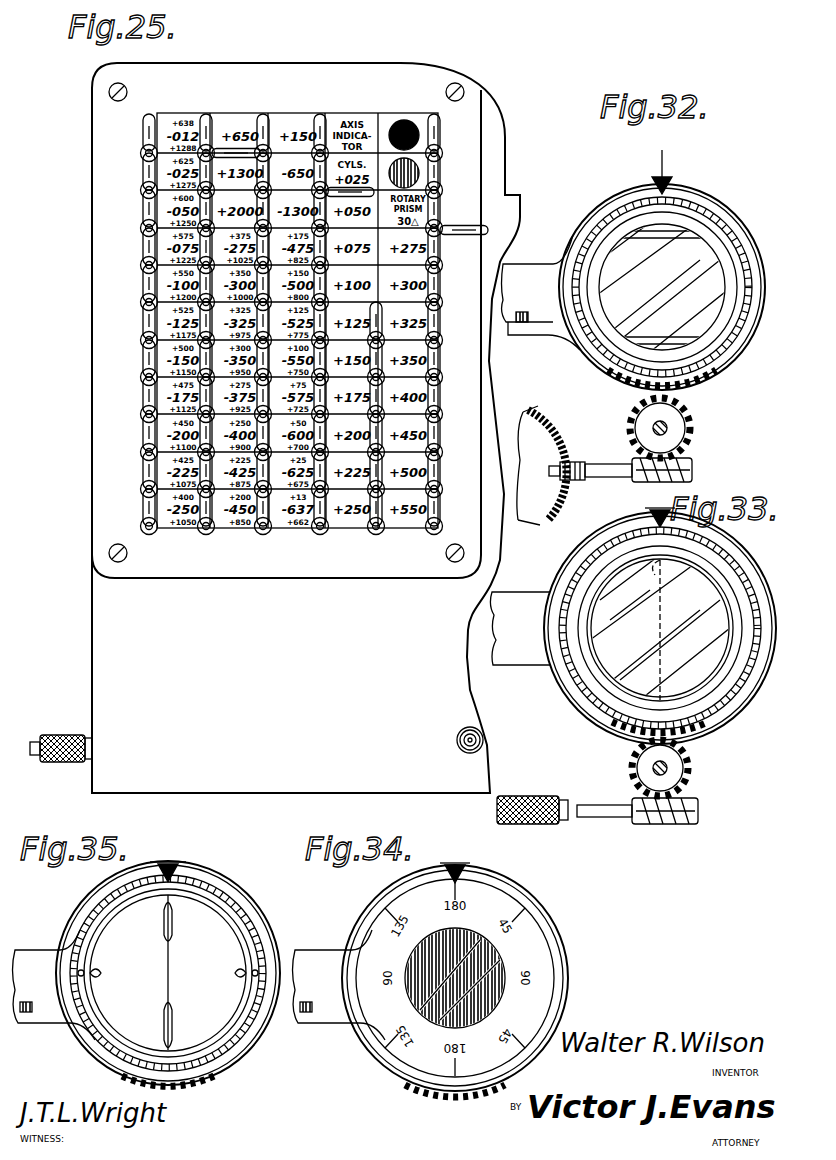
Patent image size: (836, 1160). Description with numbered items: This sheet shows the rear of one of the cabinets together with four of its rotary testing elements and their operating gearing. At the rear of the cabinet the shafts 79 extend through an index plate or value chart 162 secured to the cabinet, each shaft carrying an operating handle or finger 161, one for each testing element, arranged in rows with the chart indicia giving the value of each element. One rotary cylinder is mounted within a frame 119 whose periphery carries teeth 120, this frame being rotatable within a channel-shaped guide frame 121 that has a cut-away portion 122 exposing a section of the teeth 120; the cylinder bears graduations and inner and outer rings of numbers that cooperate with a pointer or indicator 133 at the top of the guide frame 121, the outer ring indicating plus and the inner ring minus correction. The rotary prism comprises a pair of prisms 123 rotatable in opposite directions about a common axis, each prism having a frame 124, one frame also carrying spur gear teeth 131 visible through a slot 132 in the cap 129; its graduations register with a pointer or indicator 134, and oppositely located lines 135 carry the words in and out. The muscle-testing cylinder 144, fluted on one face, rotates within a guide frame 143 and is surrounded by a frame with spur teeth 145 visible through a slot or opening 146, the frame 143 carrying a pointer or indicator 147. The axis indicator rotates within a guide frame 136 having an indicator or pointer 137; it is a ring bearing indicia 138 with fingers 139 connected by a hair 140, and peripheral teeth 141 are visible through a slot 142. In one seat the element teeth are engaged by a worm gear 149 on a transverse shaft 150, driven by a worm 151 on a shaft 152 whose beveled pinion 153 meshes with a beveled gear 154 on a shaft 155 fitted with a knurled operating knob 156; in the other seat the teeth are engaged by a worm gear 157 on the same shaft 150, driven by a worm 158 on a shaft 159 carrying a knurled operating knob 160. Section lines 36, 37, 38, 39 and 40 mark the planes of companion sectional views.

In FIG. 32, the section line 36 is at (658, 144).
In FIG. 32, the section line 37 is at (800, 287).
In FIG. 33, the section line 38 is at (660, 800).
In FIG. 34, the section line 39 is at (640, 978).
In FIG. 35, the section line 40 is at (176, 1132).
In FIG. 25, the shafts 79 is at (328, 150).
In FIG. 32, the frame 119 is at (690, 200).
In FIG. 32, the teeth 120 is at (700, 395).
In FIG. 32, the guide frame 121 is at (735, 215).
In FIG. 32, the cut-away portion 122 is at (718, 385).
In FIG. 33, the prisms 123 is at (620, 668).
In FIG. 33, the frame 124 is at (735, 600).
In FIG. 33, the cap 129 is at (740, 560).
In FIG. 33, the spur gear teeth 131 is at (700, 730).
In FIG. 33, the slot 132 is at (700, 722).
In FIG. 32, the pointer or indicator 133 is at (668, 175).
In FIG. 33, the pointer or indicator 134 is at (645, 512).
In FIG. 33, the lines 135 is at (668, 655).
In FIG. 35, the guide frame 136 is at (255, 900).
In FIG. 35, the indicator or pointer 137 is at (181, 860).
In FIG. 35, the indicia 138 is at (95, 925).
In FIG. 35, the fingers 139 is at (173, 930).
In FIG. 35, the hair 140 is at (172, 985).
In FIG. 35, the teeth 141 is at (200, 1085).
In FIG. 35, the slot 142 is at (240, 1068).
In FIG. 34, the guide frame 143 is at (545, 933).
In FIG. 34, the cylinder 144 is at (505, 998).
In FIG. 34, the spur teeth 145 is at (428, 1085).
In FIG. 34, the slot or opening 146 is at (500, 1085).
In FIG. 34, the pointer or indicator 147 is at (470, 865).
In FIG. 32, the worm gear 149 is at (690, 428).
In FIG. 32, the shaft 150 is at (635, 430).
In FIG. 33, the shaft 150 is at (680, 775).
In FIG. 32, the worm 151 is at (698, 462).
In FIG. 32, the shaft 152 is at (560, 477).
In FIG. 32, the beveled pinion 153 is at (570, 460).
In FIG. 32, the beveled gear 154 is at (533, 410).
In FIG. 25, the shaft 155 is at (460, 742).
In FIG. 25, the knurled operating knob 156 is at (464, 730).
In FIG. 33, the worm gear 157 is at (635, 775).
In FIG. 33, the worm 158 is at (655, 826).
In FIG. 25, the shaft 159 is at (32, 745).
In FIG. 33, the shaft 159 is at (603, 818).
In FIG. 25, the knurled operating knob 160 is at (55, 730).
In FIG. 33, the knurled operating knob 160 is at (520, 826).
In FIG. 25, the operating handle or finger 161 is at (145, 280).
In FIG. 25, the index plate or value chart 162 is at (268, 578).